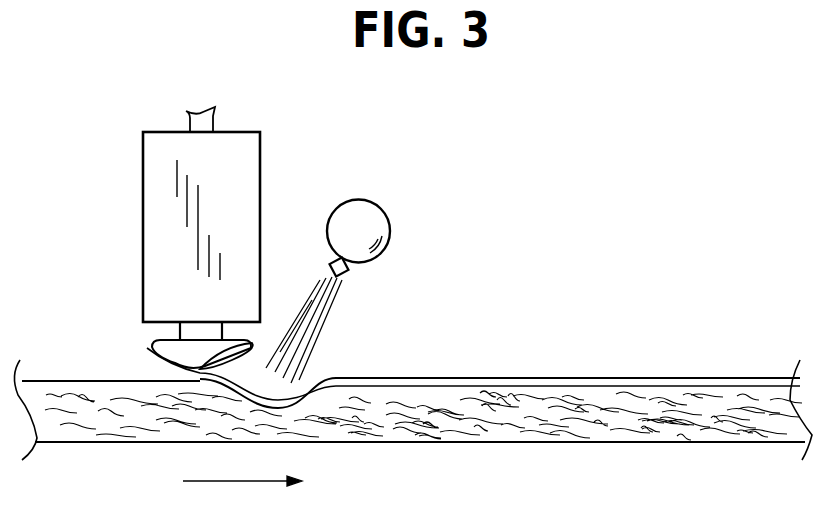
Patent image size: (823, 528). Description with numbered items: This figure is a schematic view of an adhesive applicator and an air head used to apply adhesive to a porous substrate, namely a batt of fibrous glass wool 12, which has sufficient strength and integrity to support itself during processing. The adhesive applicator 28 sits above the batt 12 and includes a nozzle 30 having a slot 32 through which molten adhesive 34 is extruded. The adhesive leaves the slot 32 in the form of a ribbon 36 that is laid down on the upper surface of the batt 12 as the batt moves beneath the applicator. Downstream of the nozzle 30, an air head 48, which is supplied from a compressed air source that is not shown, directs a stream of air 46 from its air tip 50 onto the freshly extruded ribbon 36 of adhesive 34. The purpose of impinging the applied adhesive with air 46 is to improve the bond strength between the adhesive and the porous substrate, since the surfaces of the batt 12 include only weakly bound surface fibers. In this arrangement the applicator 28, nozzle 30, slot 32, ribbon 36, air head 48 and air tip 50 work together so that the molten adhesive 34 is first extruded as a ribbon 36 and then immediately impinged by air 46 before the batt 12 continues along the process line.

The batt of fibrous glass wool 12 is at (557, 423).
The adhesive applicator 28 is at (263, 162).
The nozzle 30 is at (153, 345).
The slot 32 is at (255, 350).
The molten adhesive 34 is at (197, 372).
The ribbon 36 is at (552, 378).
The air 46 is at (322, 325).
The air head 48 is at (382, 202).
The air tip 50 is at (350, 270).